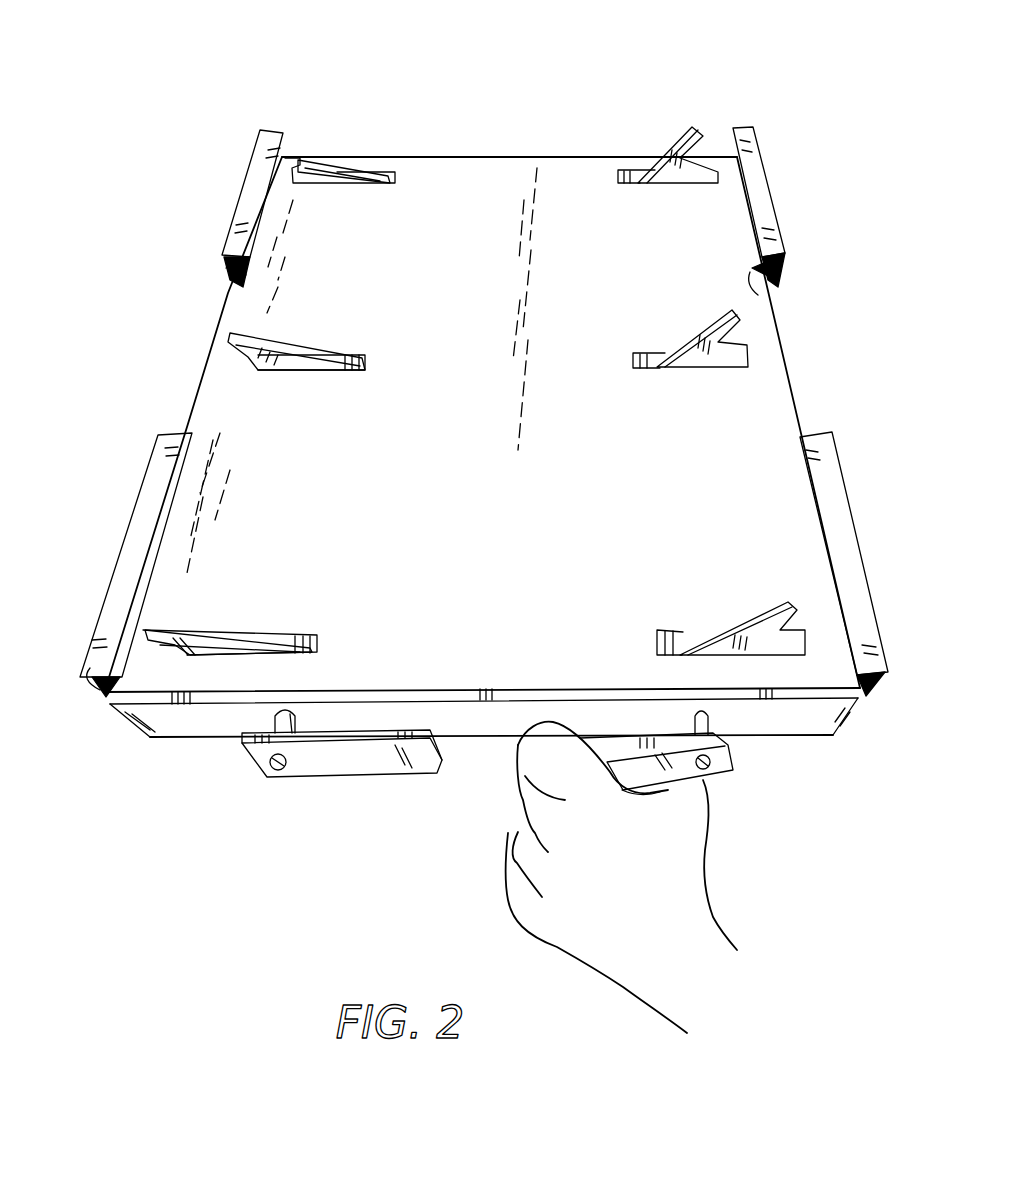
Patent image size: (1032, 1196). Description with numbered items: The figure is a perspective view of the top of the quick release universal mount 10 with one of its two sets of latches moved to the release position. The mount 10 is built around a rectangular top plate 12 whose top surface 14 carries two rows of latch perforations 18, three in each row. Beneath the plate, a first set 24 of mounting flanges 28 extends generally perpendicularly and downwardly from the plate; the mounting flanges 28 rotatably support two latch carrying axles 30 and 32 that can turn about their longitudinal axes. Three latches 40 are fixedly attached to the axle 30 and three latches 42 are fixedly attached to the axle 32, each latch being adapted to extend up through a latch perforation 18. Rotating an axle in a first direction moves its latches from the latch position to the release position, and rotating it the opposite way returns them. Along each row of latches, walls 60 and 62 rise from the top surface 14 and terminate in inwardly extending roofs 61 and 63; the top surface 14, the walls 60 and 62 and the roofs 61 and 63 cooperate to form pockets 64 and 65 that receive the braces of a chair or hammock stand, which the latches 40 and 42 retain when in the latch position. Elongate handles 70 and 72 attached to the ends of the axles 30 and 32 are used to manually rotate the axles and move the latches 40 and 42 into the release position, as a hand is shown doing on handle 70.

The quick release universal mount 10 is at (365, 104).
The top plate 12 is at (492, 175).
The top surface 14 is at (460, 470).
The latch perforations 18 is at (377, 178).
The first set of mounting flanges 24 is at (136, 752).
The mounting flange 28 is at (216, 728).
The latch carrying axle 30 is at (712, 724).
The latch carrying axle 32 is at (306, 748).
The latch 40 is at (672, 166).
The latch 42 is at (310, 170).
The wall 60 is at (775, 265).
The roof 61 is at (757, 160).
The wall 62 is at (228, 268).
The roof 63 is at (265, 158).
The pocket 64 is at (775, 283).
The pocket 65 is at (228, 292).
The elongate handle 70 is at (718, 773).
The elongate handle 72 is at (391, 768).